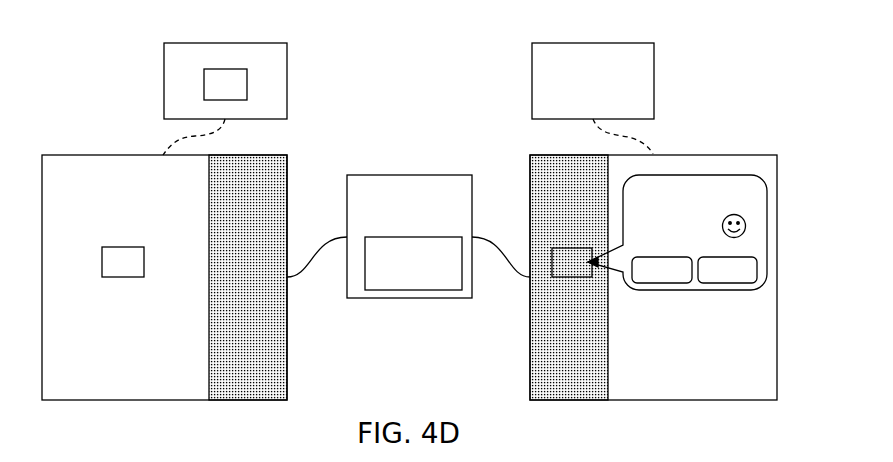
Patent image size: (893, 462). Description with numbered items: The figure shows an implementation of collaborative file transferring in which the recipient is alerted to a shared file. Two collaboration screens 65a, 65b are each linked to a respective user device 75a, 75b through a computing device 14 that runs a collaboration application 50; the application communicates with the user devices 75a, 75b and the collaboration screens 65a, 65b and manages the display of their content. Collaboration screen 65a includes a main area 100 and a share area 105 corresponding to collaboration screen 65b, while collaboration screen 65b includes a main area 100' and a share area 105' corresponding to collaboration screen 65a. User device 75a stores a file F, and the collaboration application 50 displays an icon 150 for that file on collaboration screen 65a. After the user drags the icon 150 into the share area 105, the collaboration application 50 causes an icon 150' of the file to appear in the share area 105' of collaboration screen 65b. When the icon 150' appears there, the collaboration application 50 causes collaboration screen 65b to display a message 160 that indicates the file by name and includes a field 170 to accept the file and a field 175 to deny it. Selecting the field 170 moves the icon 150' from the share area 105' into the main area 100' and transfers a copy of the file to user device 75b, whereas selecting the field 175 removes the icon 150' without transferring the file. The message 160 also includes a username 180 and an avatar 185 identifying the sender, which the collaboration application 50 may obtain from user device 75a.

The computing device 14 is at (408, 236).
The collaboration application 50 is at (413, 263).
The collaboration screen 65a is at (105, 149).
The collaboration screen 65b is at (712, 149).
The user device 75a is at (188, 43).
The user device 75b is at (638, 43).
The main area 100 is at (164, 302).
The main area 100' is at (653, 301).
The share area 105 is at (243, 302).
The share area 105' is at (569, 301).
The icon 150 is at (110, 287).
The icon 150' is at (567, 287).
The message 160 is at (705, 281).
The field to accept the file 170 is at (660, 284).
The field to deny the file 175 is at (732, 284).
The username 180 is at (706, 238).
The avatar 185 is at (754, 217).